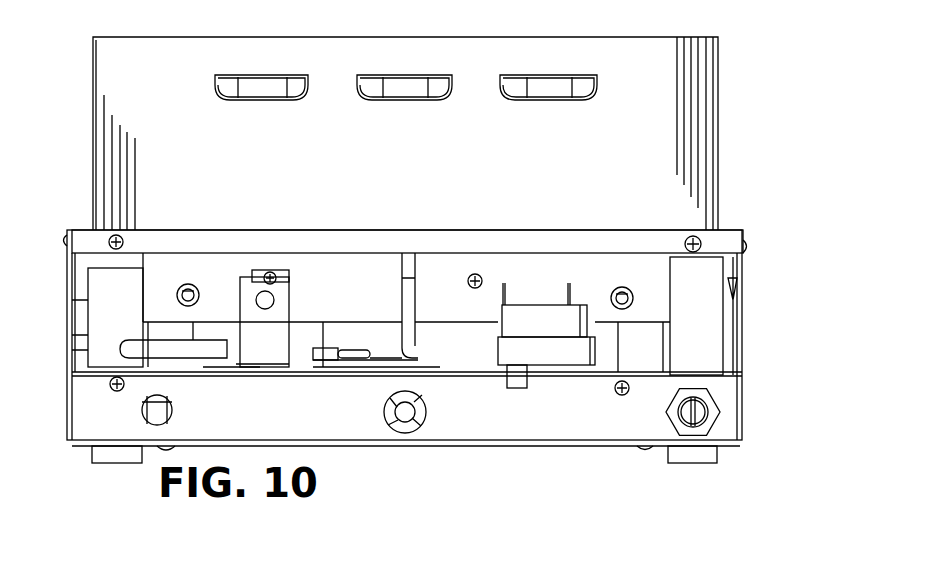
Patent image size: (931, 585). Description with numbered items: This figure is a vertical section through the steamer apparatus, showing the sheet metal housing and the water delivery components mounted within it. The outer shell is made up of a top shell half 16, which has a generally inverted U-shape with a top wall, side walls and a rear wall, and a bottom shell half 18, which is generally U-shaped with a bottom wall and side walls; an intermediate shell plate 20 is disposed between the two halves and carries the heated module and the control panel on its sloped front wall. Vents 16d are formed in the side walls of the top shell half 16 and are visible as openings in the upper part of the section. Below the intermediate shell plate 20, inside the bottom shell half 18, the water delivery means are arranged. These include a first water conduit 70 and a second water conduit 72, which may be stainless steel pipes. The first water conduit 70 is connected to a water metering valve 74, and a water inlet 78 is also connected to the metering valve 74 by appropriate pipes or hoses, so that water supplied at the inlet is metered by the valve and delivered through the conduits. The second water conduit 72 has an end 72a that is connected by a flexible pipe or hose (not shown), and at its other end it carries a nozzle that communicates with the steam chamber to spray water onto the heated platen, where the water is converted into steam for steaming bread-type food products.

The top shell half 16 is at (546, 56).
The vents 16d is at (548, 92).
The intermediate shell plate 20 is at (86, 230).
The bottom shell half 18 is at (57, 290).
The first water conduit 70 is at (108, 353).
The second water conduit 72 is at (436, 372).
The end of second water conduit 72a is at (321, 362).
The water metering valve 74 is at (247, 287).
The water inlet 78 is at (405, 433).